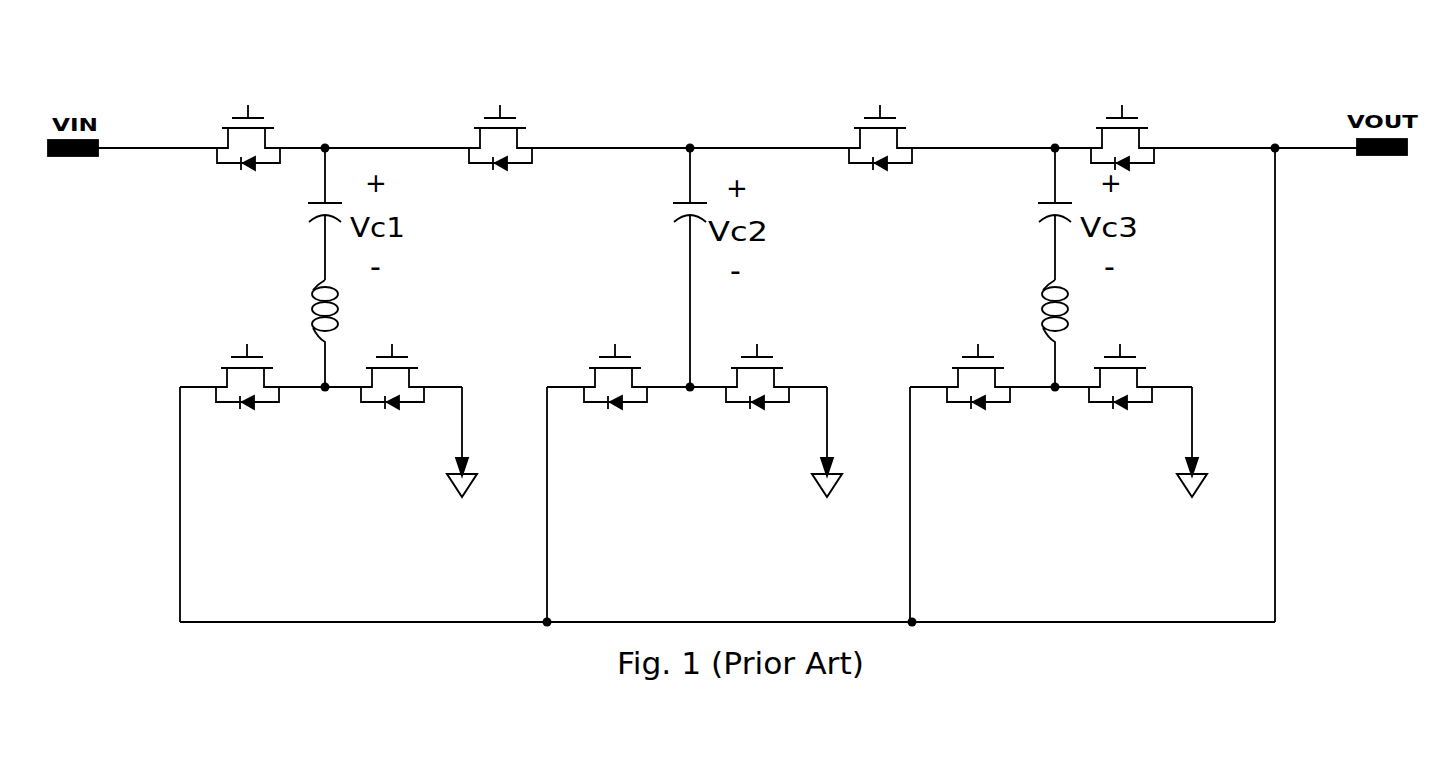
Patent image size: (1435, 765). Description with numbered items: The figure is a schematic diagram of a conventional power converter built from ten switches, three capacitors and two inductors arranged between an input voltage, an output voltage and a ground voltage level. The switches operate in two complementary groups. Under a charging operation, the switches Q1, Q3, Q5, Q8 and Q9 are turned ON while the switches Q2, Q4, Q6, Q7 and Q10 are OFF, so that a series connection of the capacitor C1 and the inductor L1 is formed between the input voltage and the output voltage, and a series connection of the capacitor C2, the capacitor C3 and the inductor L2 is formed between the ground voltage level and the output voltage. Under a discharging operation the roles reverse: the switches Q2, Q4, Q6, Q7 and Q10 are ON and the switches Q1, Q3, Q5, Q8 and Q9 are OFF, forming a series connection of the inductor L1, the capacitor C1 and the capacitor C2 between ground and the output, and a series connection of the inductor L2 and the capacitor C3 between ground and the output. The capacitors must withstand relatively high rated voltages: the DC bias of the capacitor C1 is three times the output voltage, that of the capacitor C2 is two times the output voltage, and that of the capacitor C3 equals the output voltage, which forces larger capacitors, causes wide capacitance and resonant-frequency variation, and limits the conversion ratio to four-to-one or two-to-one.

The switch Q1 is at (247, 121).
The switch Q2 is at (505, 121).
The switch Q3 is at (885, 121).
The switch Q4 is at (1116, 121).
The switch Q5 is at (242, 400).
The switch Q6 is at (395, 400).
The switch Q7 is at (623, 400).
The switch Q8 is at (757, 400).
The switch Q9 is at (985, 400).
The switch Q10 is at (1122, 400).
The capacitor C1 is at (273, 214).
The capacitor C2 is at (638, 267).
The capacitor C3 is at (1006, 214).
The inductor L1 is at (271, 333).
The inductor L2 is at (1006, 333).